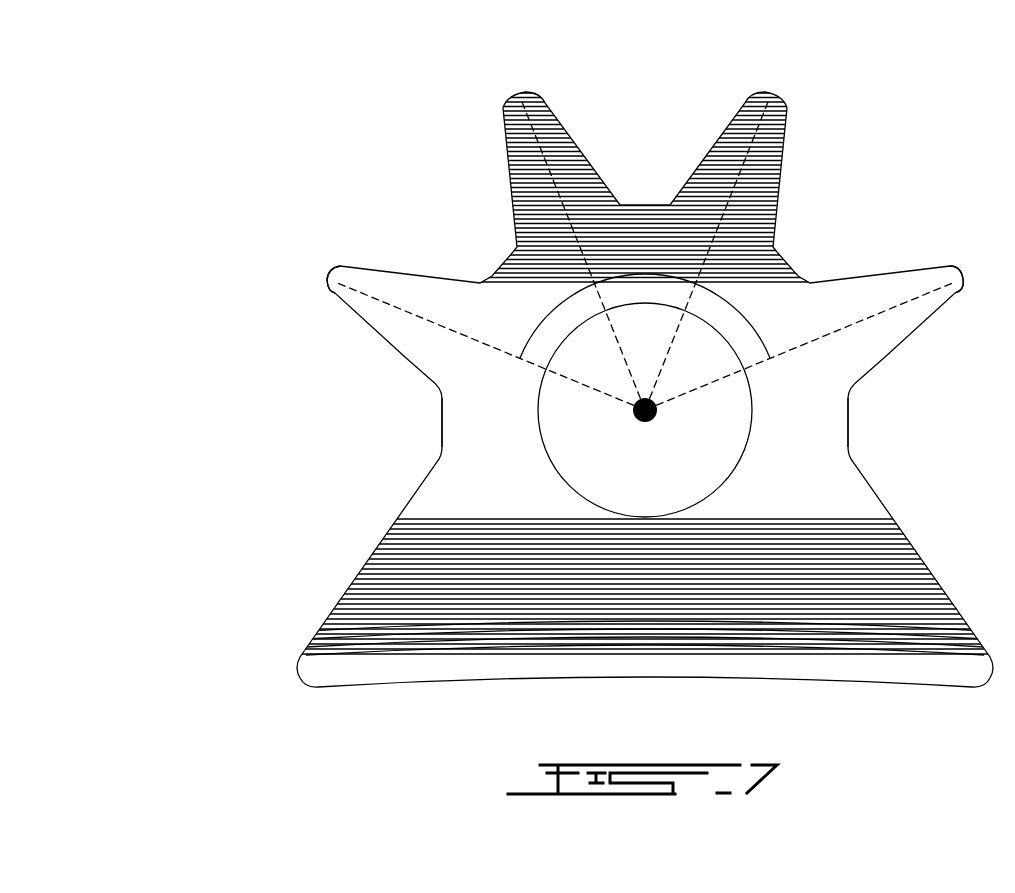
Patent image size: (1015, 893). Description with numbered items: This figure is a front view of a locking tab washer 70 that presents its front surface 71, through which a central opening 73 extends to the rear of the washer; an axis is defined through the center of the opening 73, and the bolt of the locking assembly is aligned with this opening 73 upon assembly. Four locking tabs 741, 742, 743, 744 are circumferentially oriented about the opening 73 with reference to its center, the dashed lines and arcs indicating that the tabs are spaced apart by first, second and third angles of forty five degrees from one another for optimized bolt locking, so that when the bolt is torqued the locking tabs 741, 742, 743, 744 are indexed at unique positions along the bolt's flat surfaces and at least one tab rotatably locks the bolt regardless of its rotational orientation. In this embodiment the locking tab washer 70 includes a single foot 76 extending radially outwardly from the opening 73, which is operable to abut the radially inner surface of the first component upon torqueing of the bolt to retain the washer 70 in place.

The locking tab washer 70 is at (519, 353).
The front surface 71 is at (822, 397).
The central opening 73 is at (715, 447).
The locking tab 741 is at (352, 303).
The locking tab 742 is at (512, 120).
The locking tab 743 is at (750, 117).
The locking tab 744 is at (807, 287).
The foot 76 is at (375, 602).